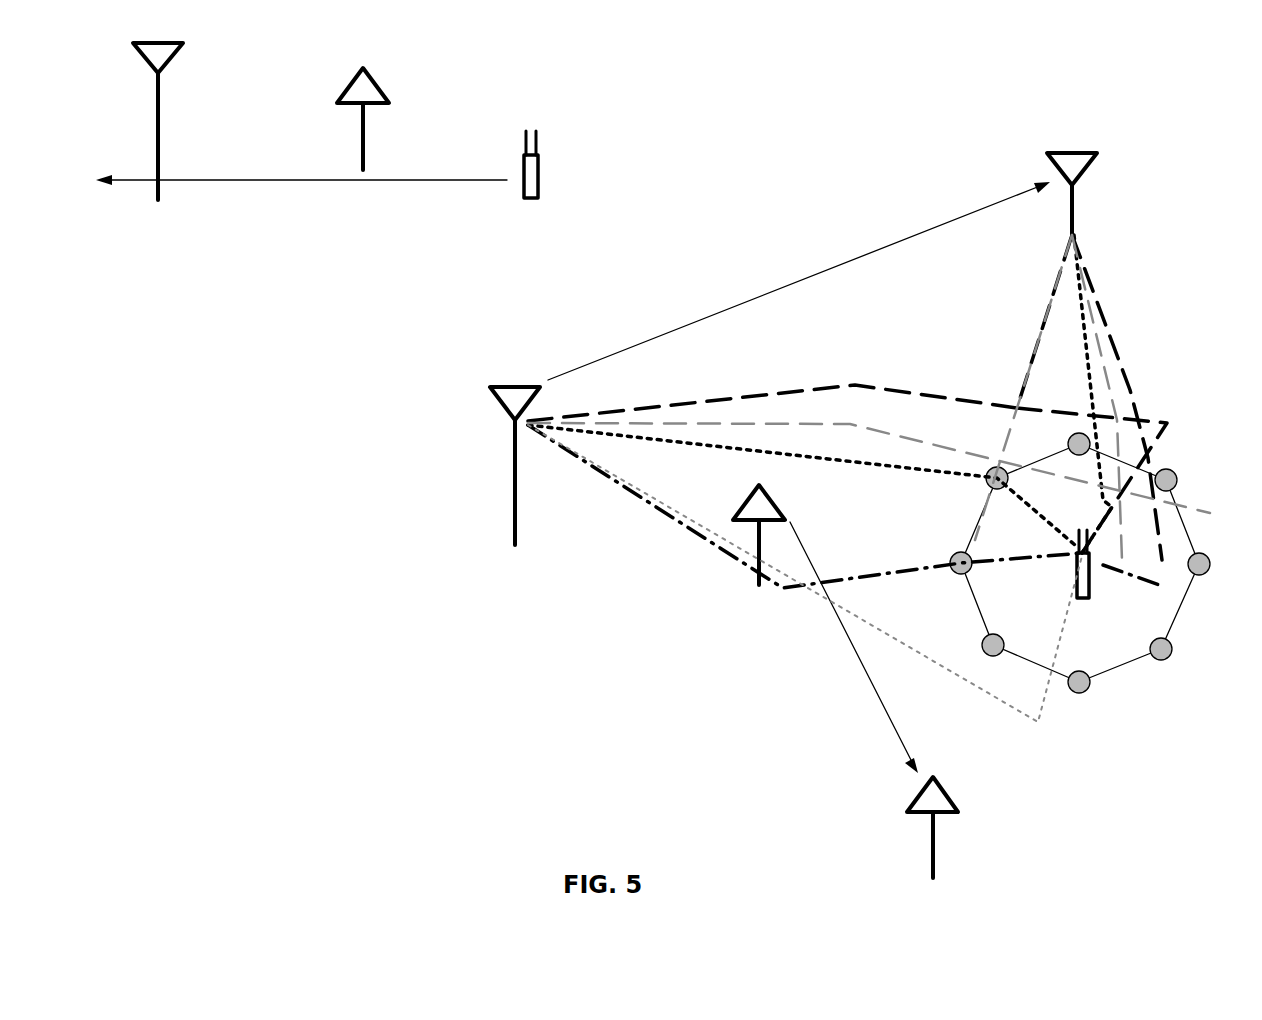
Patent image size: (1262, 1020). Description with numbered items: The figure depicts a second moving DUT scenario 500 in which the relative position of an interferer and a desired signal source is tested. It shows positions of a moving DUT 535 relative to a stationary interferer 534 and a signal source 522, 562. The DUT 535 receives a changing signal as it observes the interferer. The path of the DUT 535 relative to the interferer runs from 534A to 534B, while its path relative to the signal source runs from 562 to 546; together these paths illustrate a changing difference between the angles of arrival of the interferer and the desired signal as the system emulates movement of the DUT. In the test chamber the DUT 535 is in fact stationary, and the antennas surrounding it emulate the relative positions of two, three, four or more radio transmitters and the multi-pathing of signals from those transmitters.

The beam steering scenario 500 is at (1235, 57).
The signal source 522 is at (176, 58).
The stationary interferer 534 is at (378, 82).
The moving DUT 535 is at (543, 167).
The signal source position 546 is at (1090, 170).
The signal source 562 is at (487, 382).
The interferer position 534A is at (771, 497).
The interferer position 534B is at (945, 790).